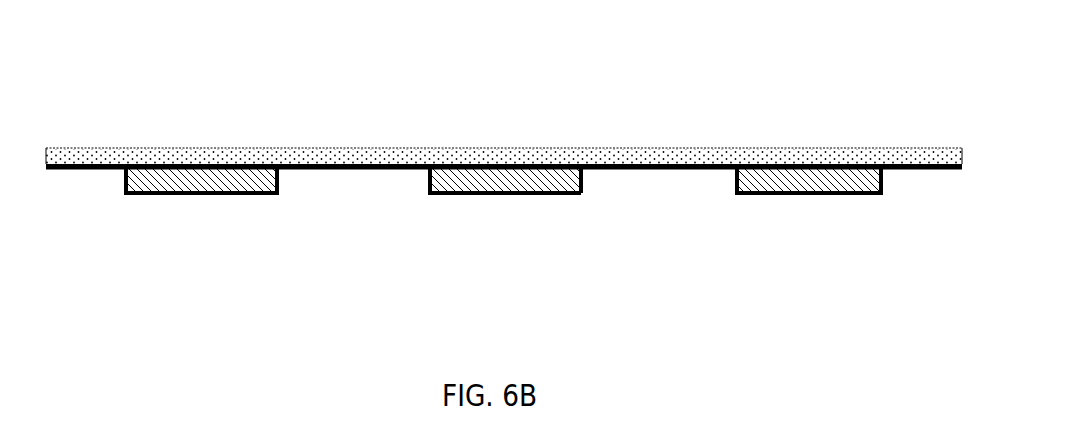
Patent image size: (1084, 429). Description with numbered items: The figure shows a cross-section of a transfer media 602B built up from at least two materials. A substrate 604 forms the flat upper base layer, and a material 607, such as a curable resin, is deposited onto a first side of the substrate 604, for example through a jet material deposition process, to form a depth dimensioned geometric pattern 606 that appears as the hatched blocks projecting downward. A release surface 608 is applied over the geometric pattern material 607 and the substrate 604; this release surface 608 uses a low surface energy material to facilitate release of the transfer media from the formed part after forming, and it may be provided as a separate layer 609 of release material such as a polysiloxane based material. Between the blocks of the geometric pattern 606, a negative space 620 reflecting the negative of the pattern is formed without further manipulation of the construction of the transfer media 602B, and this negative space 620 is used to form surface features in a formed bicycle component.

The transfer media 602B is at (306, 100).
The substrate 604 is at (391, 153).
The geometric pattern 606 is at (490, 178).
The material 607 is at (441, 183).
The release surface 608 is at (340, 172).
The separate layer 609 is at (577, 195).
The negative space 620 is at (735, 190).